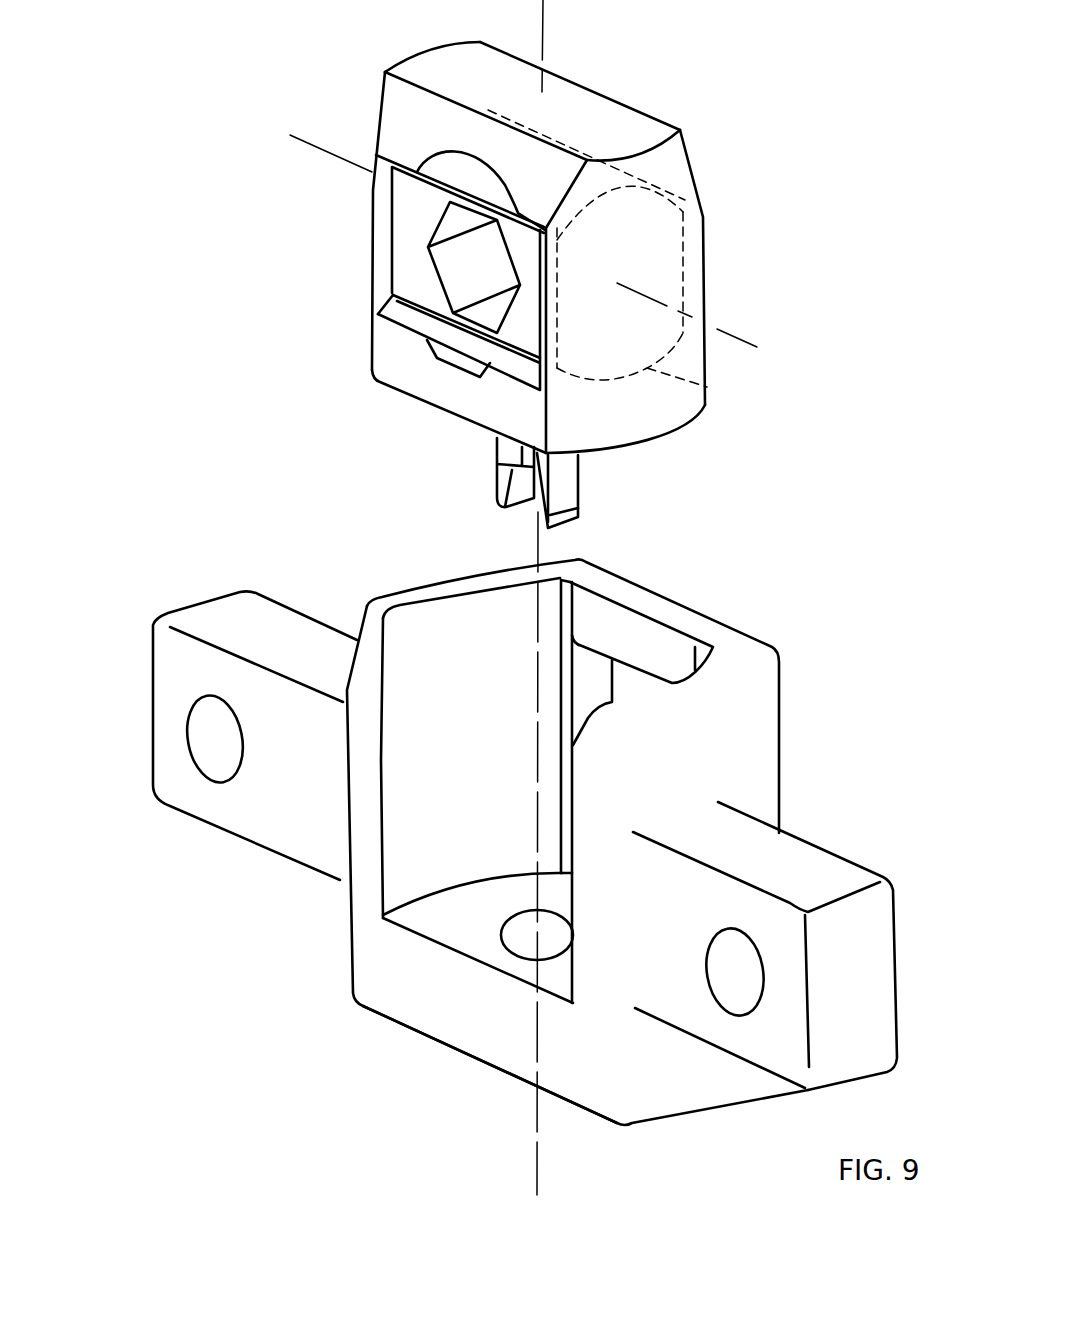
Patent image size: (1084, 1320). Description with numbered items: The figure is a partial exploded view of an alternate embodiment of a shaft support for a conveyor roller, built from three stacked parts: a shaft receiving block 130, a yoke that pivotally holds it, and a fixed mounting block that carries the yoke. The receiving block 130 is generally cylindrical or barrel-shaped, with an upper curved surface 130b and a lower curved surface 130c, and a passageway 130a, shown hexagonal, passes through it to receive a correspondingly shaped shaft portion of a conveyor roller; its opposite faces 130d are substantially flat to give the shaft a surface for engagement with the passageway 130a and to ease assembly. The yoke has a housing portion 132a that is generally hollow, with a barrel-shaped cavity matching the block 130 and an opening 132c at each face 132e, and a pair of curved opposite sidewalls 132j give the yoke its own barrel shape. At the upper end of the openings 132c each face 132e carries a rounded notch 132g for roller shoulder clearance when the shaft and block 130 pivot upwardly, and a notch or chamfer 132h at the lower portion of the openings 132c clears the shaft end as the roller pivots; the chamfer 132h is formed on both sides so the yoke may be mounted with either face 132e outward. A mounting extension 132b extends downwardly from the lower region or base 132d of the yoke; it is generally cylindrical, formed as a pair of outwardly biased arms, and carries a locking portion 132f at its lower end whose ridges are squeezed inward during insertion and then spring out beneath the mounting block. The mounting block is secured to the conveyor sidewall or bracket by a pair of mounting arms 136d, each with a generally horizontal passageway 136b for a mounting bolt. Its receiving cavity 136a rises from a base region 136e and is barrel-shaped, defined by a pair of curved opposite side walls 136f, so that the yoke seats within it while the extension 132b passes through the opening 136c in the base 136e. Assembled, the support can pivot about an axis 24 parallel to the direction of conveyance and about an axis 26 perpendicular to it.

The axis 24 is at (748, 340).
The axis 26 is at (538, 1167).
The shaft receiving block 130 is at (410, 222).
The passageway 130a is at (460, 270).
The upper curved surface 130b is at (447, 178).
The lower curved surface 130c is at (707, 387).
The opposite faces or sides 130d is at (377, 320).
The housing portion 132a is at (360, 236).
The mounting extension 132b is at (580, 472).
The opening 132c is at (383, 296).
The lower region or base 132d is at (467, 393).
The face 132e is at (397, 348).
The locking portion 132f is at (583, 511).
The rounded notch or opening 132g is at (393, 193).
The notch or chamfer 132h is at (465, 358).
The curved opposite sidewalls 132j is at (424, 50).
The receiving cavity 136a is at (430, 868).
The passageway or opening 136b is at (212, 763).
The opening or passageway 136c is at (523, 948).
The mounting arms 136d is at (295, 622).
The base region 136e is at (407, 963).
The curved opposite side walls 136f is at (403, 822).